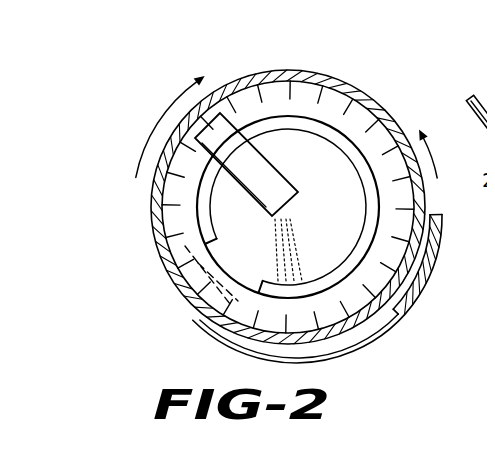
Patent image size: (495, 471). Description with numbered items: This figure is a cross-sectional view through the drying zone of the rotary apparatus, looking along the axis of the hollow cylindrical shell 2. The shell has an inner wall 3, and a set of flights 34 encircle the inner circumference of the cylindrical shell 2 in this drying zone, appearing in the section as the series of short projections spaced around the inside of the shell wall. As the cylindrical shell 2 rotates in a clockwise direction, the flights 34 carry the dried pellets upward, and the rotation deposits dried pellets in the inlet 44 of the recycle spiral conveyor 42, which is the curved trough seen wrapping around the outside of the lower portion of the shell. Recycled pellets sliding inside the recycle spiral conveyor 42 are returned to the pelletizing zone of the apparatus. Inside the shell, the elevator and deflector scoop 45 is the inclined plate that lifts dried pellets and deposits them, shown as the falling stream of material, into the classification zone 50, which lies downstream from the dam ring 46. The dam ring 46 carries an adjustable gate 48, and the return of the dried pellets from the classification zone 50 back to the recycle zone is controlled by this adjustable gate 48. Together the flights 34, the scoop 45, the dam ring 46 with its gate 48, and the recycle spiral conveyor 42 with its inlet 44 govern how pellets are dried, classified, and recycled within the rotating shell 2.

The hollow cylindrical shell 2 is at (274, 188).
The inner wall 3 is at (346, 90).
The flights 34 is at (388, 150).
The elevator and deflector scoop 45 is at (272, 175).
The classification zone 50 is at (350, 229).
The adjustable gate 48 is at (198, 245).
The inlet 44 is at (242, 343).
The recycle spiral conveyor 42 is at (313, 286).
The dam ring 46 is at (379, 203).